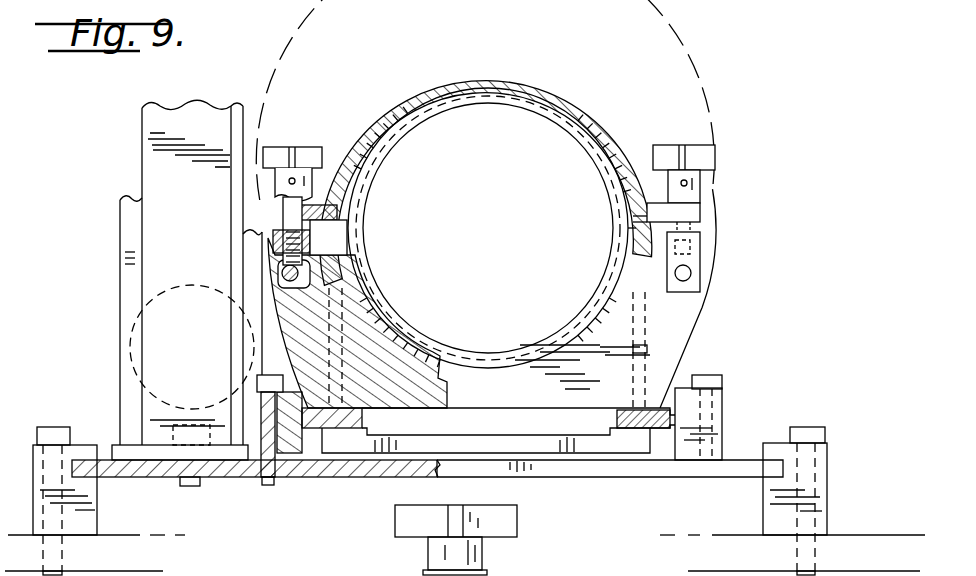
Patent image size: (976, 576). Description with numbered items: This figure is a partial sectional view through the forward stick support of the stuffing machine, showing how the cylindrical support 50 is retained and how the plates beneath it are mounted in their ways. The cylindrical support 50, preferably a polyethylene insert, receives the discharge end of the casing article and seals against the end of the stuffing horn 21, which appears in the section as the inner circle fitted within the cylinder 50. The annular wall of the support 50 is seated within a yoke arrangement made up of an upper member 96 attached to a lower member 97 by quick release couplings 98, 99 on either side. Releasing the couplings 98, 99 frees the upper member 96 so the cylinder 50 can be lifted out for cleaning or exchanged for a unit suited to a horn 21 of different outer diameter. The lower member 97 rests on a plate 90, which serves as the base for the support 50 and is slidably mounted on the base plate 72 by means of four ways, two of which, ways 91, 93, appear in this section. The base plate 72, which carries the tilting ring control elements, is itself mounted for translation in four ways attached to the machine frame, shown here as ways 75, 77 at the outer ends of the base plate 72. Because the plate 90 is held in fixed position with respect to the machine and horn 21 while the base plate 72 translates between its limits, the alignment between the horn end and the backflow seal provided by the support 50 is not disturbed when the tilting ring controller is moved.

The pipe 21 is at (410, 137).
The cylindrical support 50 is at (598, 130).
The base plate 72 is at (640, 478).
The way 75 is at (93, 518).
The way 77 is at (827, 498).
The plate 90 is at (548, 457).
The way 91 is at (293, 463).
The way 93 is at (722, 405).
The upper member 96 is at (433, 72).
The lower member 97 is at (368, 328).
The quick release coupling 98 is at (312, 146).
The quick release coupling 99 is at (707, 150).